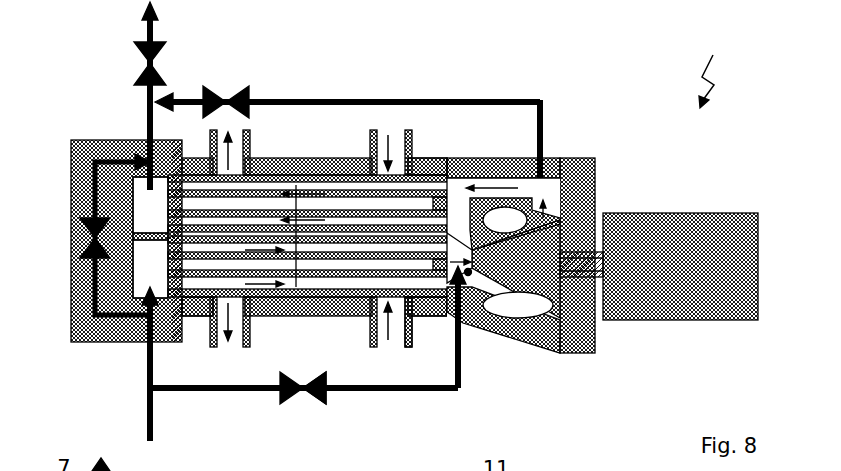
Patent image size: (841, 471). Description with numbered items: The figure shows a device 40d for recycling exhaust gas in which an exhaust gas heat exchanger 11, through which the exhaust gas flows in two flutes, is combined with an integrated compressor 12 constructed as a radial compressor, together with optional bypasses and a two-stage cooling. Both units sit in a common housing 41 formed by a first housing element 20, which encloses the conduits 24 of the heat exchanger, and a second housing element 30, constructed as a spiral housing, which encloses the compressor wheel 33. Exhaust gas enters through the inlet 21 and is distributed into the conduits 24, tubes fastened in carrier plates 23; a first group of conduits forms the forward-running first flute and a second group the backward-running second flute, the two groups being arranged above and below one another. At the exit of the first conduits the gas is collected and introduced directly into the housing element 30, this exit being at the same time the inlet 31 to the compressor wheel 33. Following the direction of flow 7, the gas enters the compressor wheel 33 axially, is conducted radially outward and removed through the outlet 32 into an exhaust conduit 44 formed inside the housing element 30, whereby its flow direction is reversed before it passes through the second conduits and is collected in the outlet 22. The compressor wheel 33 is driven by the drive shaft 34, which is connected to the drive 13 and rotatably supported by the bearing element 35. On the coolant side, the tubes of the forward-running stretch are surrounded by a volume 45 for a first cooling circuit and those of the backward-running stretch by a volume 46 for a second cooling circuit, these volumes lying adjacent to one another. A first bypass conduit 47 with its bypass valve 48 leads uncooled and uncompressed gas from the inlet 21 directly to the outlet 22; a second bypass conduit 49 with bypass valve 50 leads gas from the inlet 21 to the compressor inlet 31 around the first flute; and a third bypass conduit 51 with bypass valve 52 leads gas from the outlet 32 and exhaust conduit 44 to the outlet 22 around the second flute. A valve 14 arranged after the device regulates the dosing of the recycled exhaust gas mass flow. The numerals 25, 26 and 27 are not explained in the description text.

The direction of flow 7 is at (144, 28).
The exhaust gas heat exchanger 11 is at (384, 88).
The compressor 12 is at (522, 365).
The drive 13 is at (673, 322).
The valve 14 is at (142, 58).
The first housing element 20 is at (413, 165).
The inlet 21 is at (139, 265).
The outlet 22 is at (139, 222).
The carrier plates 23 is at (448, 163).
The conduits 24 is at (300, 270).
The cooling fin 25 is at (407, 350).
The outer tube 26 is at (305, 225).
The cooling fins 27 is at (232, 143).
The second housing element 30 is at (552, 352).
The inlet 31 is at (473, 332).
The outlet 32 is at (143, 128).
The compressor wheel 33 is at (499, 172).
The drive shaft 34 is at (600, 327).
The bearing element 35 is at (585, 157).
The device 40d is at (719, 68).
The housing 41 is at (470, 165).
The exhaust conduit 44 is at (539, 175).
The volume 45 is at (443, 322).
The volume 46 is at (356, 162).
The first bypass conduit 47 is at (68, 162).
The bypass valve 48 is at (88, 343).
The second bypass conduit 49 is at (272, 395).
The bypass valve 50 is at (328, 396).
The third bypass conduit 51 is at (525, 98).
The bypass valve 52 is at (226, 90).